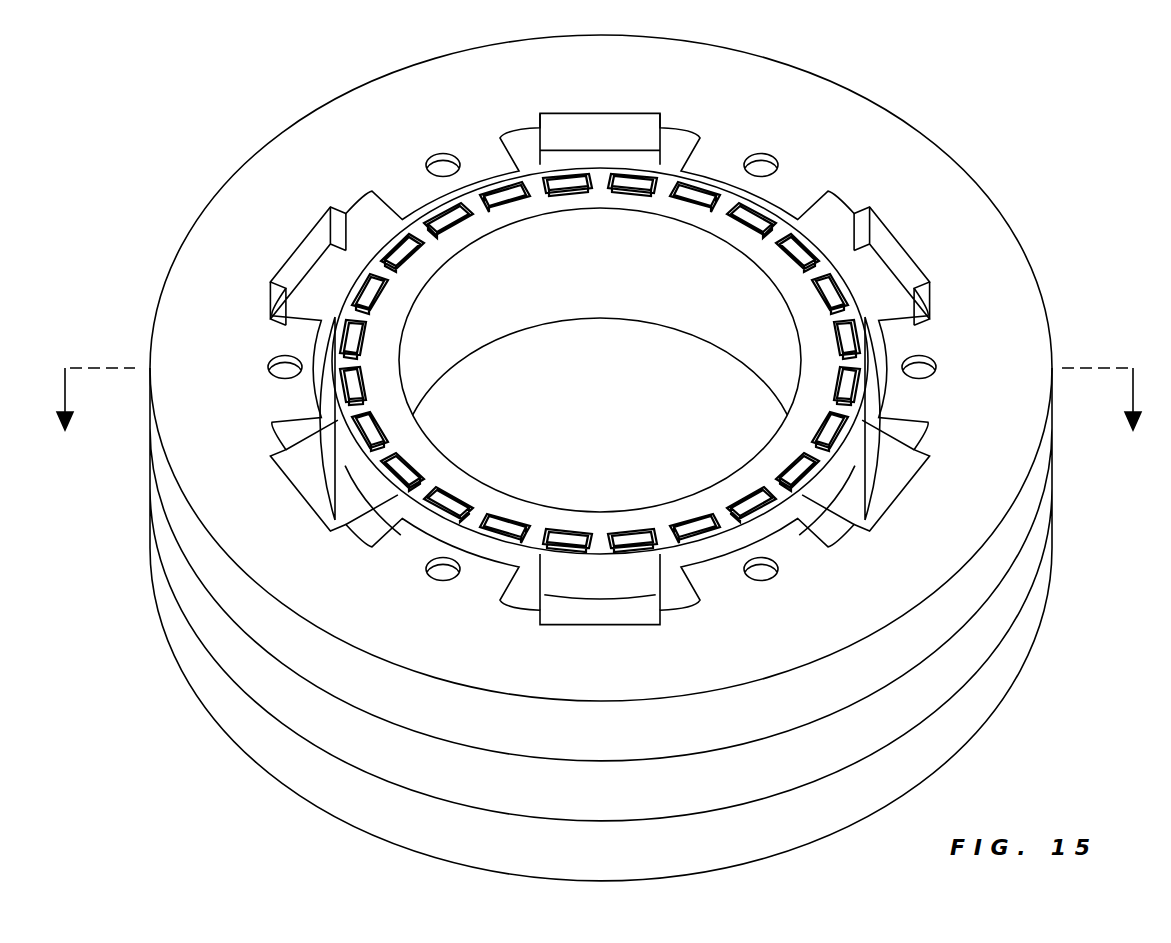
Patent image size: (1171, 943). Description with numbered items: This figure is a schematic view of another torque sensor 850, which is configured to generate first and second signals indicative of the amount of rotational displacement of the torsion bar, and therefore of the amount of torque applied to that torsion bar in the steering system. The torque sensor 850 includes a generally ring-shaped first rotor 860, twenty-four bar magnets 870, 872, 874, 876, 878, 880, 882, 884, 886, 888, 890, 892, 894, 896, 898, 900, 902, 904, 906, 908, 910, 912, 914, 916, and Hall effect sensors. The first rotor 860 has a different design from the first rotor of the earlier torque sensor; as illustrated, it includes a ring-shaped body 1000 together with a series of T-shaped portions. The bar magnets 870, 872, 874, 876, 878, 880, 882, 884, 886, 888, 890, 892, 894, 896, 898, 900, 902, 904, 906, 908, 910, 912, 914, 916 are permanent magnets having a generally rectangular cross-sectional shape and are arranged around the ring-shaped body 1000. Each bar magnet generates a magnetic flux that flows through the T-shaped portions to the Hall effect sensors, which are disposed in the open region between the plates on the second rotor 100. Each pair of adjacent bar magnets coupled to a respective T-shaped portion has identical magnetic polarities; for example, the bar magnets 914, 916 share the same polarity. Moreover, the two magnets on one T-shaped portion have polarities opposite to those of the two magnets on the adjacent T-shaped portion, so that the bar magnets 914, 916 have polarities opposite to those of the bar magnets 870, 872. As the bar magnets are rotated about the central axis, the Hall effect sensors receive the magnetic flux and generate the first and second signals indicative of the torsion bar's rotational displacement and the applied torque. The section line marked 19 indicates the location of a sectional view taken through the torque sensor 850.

The second rotor 100 is at (958, 152).
The torque sensor 850 is at (924, 100).
The first rotor 860 is at (618, 150).
The ring-shaped body 1000 is at (756, 248).
The bar magnet 870 is at (692, 203).
The bar magnet 872 is at (748, 226).
The bar magnet 874 is at (792, 255).
The bar magnet 876 is at (825, 296).
The bar magnet 878 is at (842, 341).
The bar magnet 880 is at (840, 385).
The bar magnet 882 is at (826, 430).
The bar magnet 884 is at (795, 468).
The bar magnet 886 is at (748, 500).
The bar magnet 888 is at (700, 523).
The bar magnet 890 is at (633, 535).
The bar magnet 892 is at (570, 535).
The bar magnet 894 is at (508, 524).
The bar magnet 896 is at (452, 500).
The bar magnet 898 is at (406, 470).
The bar magnet 900 is at (376, 432).
The bar magnet 902 is at (358, 387).
The bar magnet 904 is at (360, 343).
The bar magnet 906 is at (378, 298).
The bar magnet 908 is at (410, 258).
The bar magnet 910 is at (455, 225).
The bar magnet 912 is at (512, 203).
The bar magnet 914 is at (570, 190).
The bar magnet 916 is at (632, 190).
The section line 19- 19 is at (595, 417).